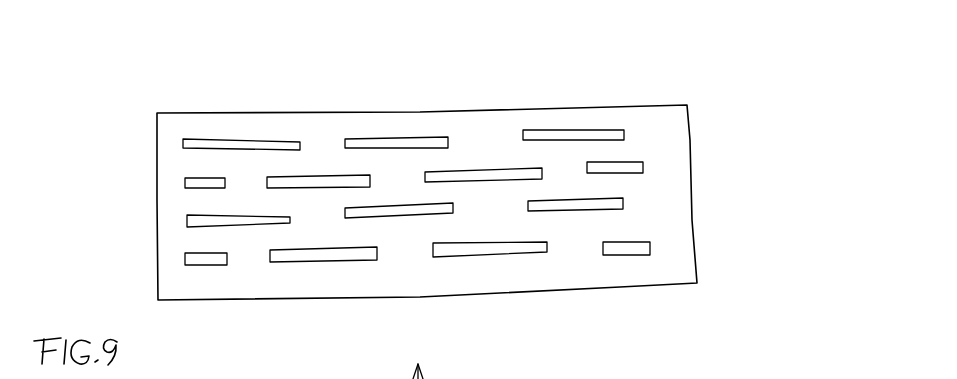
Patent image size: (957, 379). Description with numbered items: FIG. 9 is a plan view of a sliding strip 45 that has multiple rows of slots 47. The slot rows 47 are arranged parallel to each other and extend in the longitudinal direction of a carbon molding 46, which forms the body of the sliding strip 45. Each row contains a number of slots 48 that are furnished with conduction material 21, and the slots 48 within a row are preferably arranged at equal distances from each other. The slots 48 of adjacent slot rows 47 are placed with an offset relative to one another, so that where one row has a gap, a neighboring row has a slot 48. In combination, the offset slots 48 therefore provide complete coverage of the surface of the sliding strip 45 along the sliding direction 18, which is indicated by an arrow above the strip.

The sliding direction 18 is at (430, 39).
The conduction material 21 is at (518, 63).
The sliding strip 45 is at (770, 73).
The carbon molding 46 is at (723, 200).
The slot rows 47 is at (680, 75).
The slots 48 is at (588, 90).